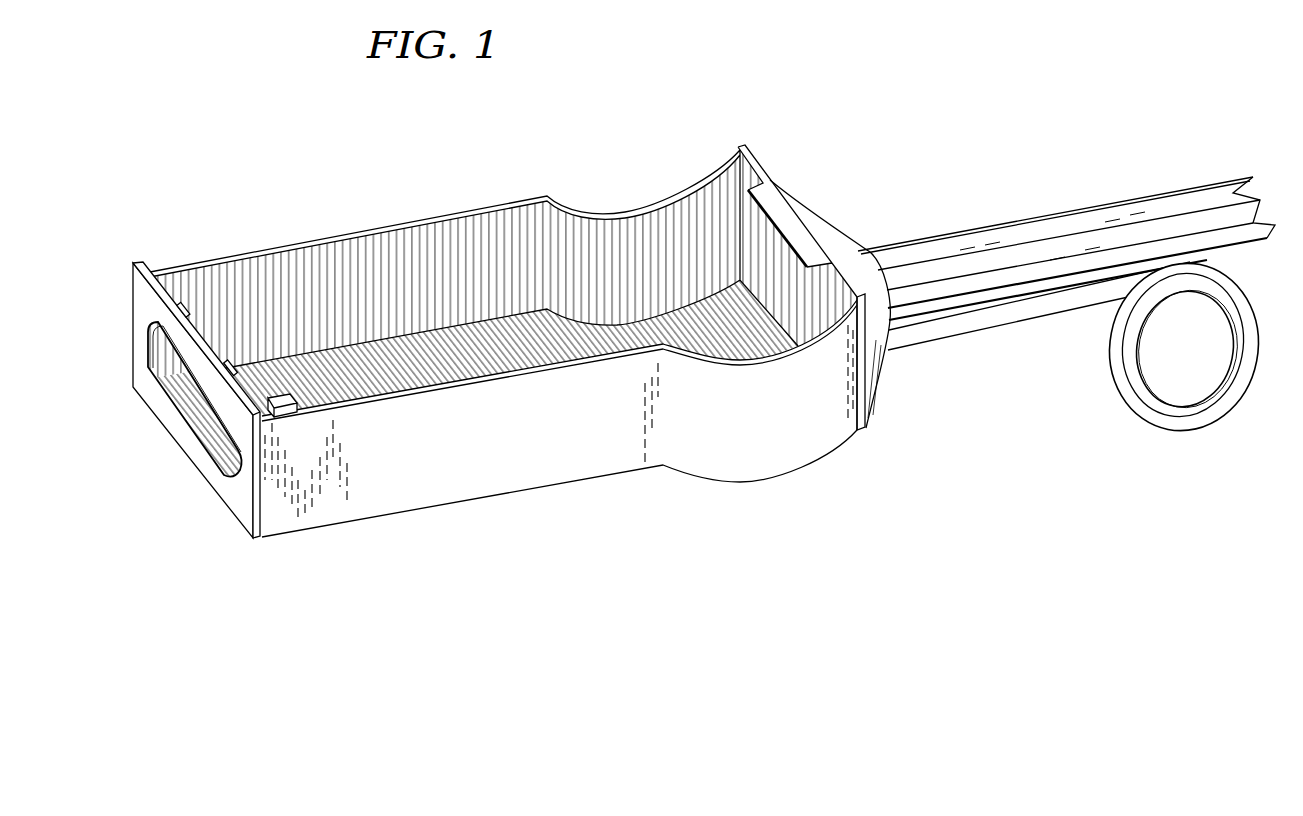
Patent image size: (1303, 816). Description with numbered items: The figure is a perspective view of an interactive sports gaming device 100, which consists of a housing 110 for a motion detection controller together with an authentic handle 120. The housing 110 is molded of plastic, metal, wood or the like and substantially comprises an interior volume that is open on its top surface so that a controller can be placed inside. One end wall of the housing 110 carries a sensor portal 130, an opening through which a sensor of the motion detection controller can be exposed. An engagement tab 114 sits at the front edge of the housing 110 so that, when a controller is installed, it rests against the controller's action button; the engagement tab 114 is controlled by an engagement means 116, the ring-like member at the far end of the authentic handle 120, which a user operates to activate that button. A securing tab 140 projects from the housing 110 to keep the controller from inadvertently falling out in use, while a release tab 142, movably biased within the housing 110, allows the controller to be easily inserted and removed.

The interactive sports gaming device 100 is at (448, 116).
The housing 110 is at (494, 355).
The engagement tab 114 is at (287, 407).
The engagement means 116 is at (1143, 410).
The authentic handle 120 is at (1058, 234).
The sensor portal 130 is at (210, 463).
The securing tab 140 is at (183, 304).
The release tab 142 is at (768, 200).